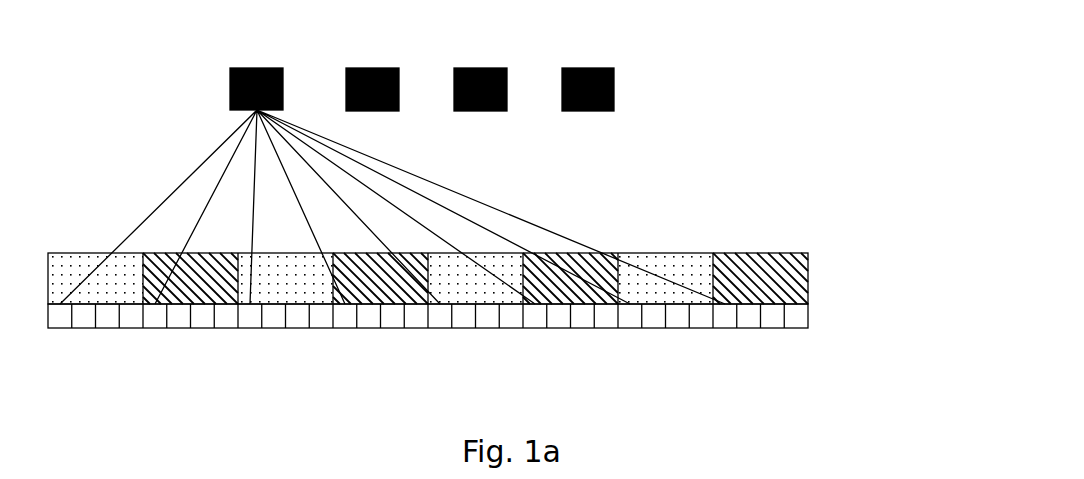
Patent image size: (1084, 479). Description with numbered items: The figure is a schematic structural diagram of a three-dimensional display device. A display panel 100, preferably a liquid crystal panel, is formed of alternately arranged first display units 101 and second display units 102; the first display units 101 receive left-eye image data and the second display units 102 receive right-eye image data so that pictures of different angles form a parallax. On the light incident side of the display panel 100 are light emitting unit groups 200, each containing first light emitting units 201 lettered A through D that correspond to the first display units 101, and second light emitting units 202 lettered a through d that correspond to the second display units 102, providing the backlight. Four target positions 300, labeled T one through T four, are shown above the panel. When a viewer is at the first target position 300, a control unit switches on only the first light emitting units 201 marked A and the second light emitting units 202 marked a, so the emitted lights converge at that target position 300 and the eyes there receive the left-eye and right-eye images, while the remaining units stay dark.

The target position 300 is at (232, 80).
The display panel 100 is at (506, 234).
The first display unit 101 is at (665, 262).
The second display unit 102 is at (755, 265).
The light emitting unit group 200 is at (502, 348).
The first light emitting unit 201 is at (630, 357).
The second light emitting unit 202 is at (440, 349).